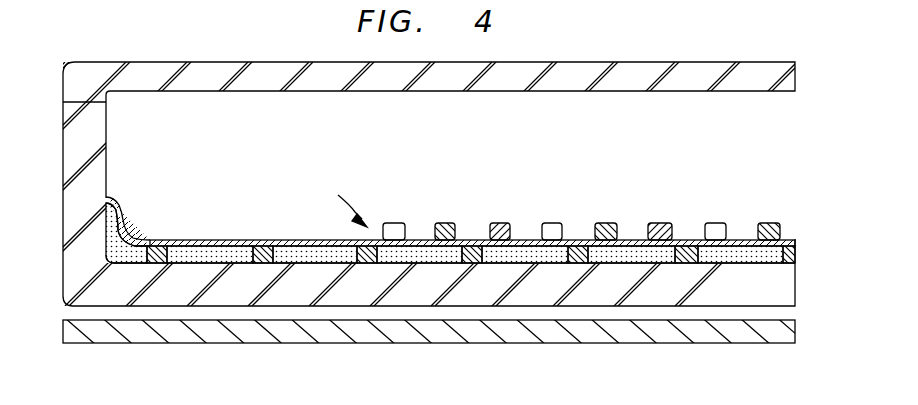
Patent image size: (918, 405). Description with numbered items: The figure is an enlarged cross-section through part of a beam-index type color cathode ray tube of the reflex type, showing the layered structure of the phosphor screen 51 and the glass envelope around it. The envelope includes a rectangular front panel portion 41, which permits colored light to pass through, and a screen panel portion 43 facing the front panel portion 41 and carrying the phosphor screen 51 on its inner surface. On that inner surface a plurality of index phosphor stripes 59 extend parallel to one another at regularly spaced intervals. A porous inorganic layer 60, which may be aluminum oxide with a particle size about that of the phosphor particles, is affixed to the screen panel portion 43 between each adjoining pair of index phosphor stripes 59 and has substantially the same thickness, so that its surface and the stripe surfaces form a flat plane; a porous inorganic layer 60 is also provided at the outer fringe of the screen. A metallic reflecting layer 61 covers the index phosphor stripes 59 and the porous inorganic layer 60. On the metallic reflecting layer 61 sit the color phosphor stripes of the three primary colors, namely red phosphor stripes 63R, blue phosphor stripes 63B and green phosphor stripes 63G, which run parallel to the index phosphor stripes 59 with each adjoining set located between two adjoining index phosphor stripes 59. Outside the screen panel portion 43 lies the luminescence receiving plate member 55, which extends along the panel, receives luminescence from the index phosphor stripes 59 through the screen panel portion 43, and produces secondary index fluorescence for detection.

The front panel portion 41 is at (281, 76).
The screen panel portion 43 is at (293, 298).
The phosphor screen 51 is at (344, 199).
The luminescence receiving plate member 55 is at (100, 343).
The index phosphor stripes 59 is at (155, 245).
The porous inorganic layer 60 is at (115, 203).
The metallic reflecting layer 61 is at (295, 240).
The green phosphor stripes 63G is at (393, 228).
The red phosphor stripes 63R is at (445, 228).
The blue phosphor stripes 63B is at (497, 228).